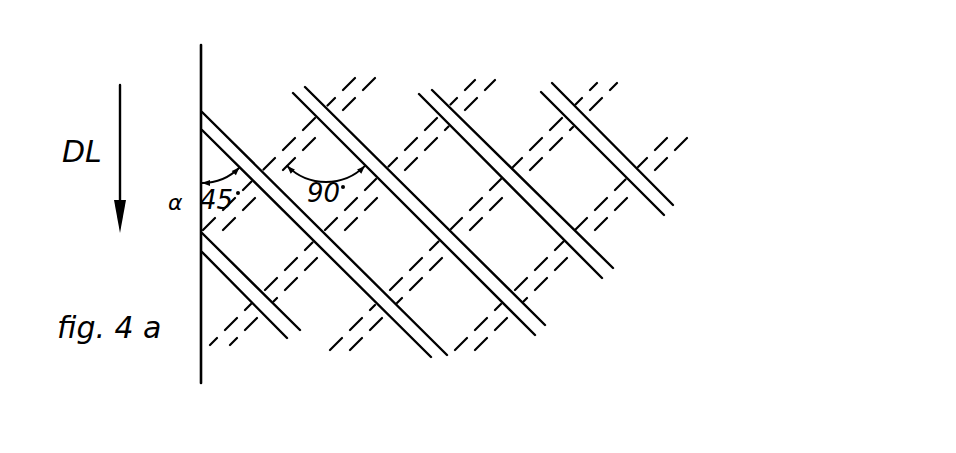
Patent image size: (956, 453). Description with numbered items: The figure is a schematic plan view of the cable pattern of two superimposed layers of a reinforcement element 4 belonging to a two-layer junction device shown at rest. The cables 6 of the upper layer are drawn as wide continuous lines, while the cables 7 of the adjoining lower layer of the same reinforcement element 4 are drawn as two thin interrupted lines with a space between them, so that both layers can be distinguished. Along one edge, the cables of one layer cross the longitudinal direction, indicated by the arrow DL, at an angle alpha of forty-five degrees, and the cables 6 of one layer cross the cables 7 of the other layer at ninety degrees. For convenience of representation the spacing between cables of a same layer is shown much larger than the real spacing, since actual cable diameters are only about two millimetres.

The reinforcement element 4 is at (688, 80).
The cables of upper layer 6 is at (543, 92).
The cables of lower layer 7 is at (490, 322).